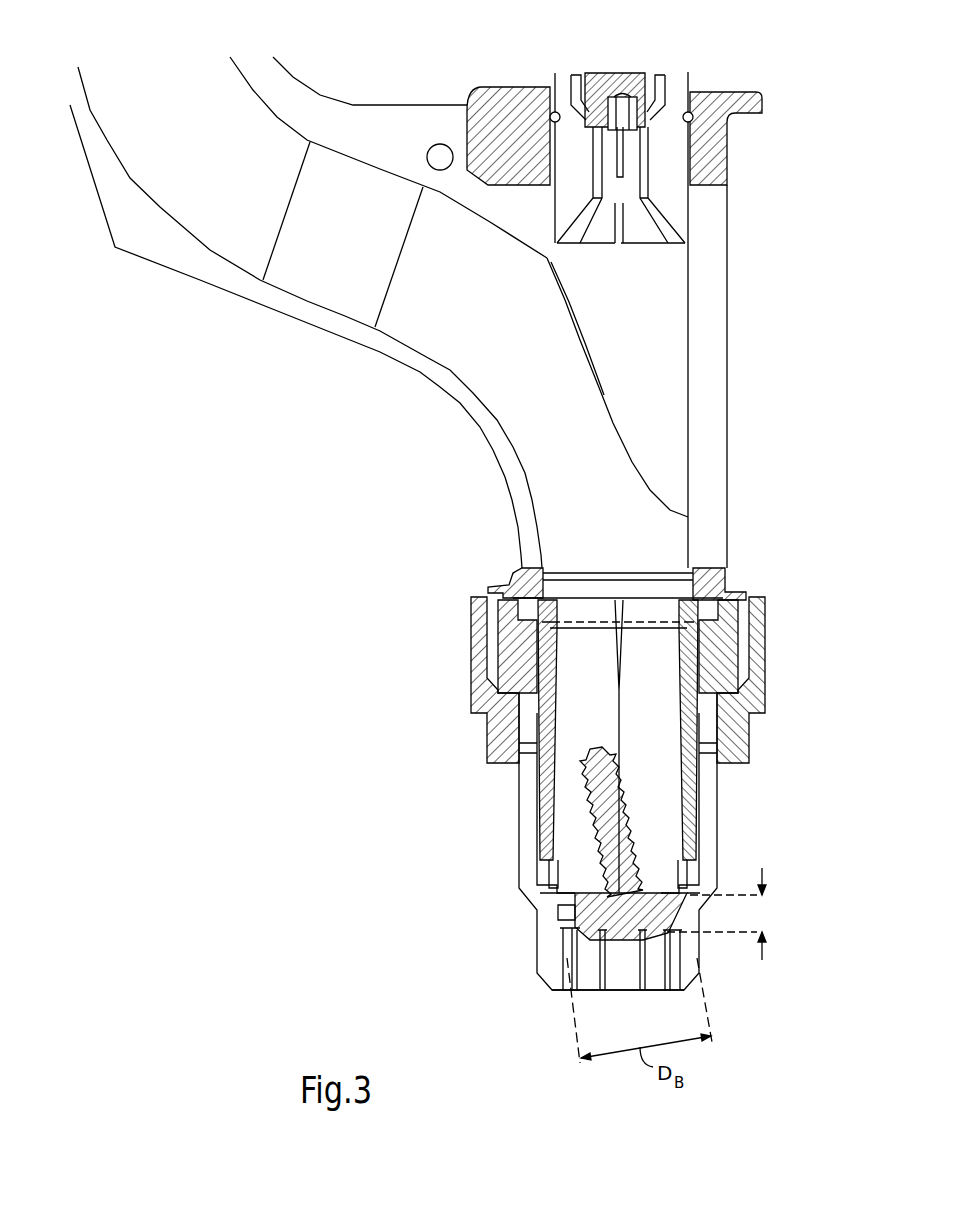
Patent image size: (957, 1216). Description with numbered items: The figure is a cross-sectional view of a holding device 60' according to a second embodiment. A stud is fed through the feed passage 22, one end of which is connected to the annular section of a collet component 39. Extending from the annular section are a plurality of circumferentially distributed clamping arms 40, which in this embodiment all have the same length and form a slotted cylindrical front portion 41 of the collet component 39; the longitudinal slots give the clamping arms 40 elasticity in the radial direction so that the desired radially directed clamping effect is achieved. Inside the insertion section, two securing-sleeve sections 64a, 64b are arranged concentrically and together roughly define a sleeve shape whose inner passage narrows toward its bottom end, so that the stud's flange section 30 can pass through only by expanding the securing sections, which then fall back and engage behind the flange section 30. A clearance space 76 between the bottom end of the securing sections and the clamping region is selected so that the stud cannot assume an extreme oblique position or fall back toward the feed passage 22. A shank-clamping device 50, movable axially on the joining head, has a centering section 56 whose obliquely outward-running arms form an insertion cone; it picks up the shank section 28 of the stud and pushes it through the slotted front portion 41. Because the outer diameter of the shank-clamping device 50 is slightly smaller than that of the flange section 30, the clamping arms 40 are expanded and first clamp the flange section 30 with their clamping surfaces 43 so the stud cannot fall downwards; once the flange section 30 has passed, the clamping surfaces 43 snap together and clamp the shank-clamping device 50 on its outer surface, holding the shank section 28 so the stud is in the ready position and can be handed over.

The feed passage 22 is at (331, 282).
The shank-clamping device 50 is at (690, 80).
The centering section 56 is at (665, 223).
The holding device 60' is at (531, 542).
The collet component 39 is at (513, 752).
The securing-sleeve section 64a is at (550, 782).
The securing-sleeve section 64b is at (687, 800).
The shank section 28 is at (617, 847).
The clamping arms 40 is at (528, 858).
The flange section 30 is at (560, 918).
The clamping surfaces 43 is at (560, 953).
The cylindrical front portion 41 is at (545, 987).
The clearance space 76 is at (751, 906).